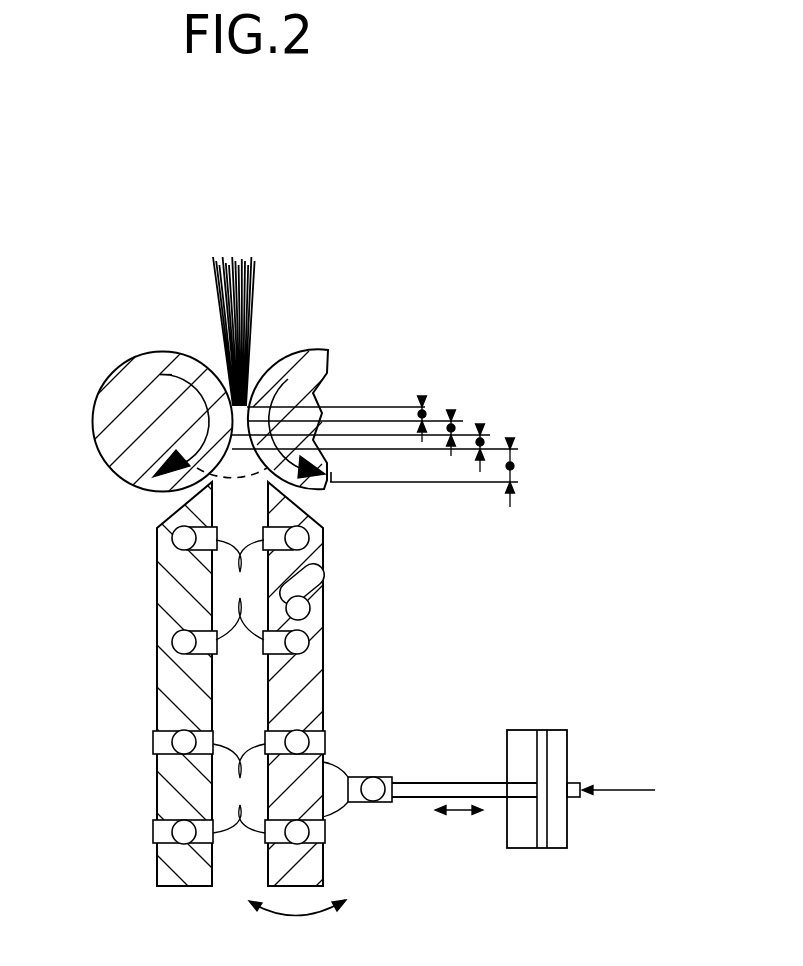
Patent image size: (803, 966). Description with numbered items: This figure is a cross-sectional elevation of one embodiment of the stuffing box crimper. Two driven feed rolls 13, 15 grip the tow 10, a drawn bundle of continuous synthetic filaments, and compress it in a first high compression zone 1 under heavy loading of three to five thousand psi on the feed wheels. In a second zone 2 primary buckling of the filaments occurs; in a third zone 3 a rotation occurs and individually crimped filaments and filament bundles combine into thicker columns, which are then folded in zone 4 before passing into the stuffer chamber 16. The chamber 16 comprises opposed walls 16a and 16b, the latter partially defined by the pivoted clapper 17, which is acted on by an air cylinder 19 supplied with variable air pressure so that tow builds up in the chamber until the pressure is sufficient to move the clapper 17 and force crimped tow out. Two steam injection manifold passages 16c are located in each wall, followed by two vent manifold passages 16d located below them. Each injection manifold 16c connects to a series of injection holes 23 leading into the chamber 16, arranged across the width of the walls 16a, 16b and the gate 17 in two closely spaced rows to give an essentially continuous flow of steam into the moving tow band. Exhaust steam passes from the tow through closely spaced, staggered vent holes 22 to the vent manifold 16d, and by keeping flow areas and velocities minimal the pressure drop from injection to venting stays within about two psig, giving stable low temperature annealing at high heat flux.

The first high compression zone 1 is at (422, 413).
The second zone 2 is at (451, 428).
The third zone 3 is at (480, 442).
The zone 4 is at (510, 466).
The tow 10 is at (235, 405).
The feed roll 13 is at (133, 353).
The feed roll 15 is at (295, 350).
The stuffer box crimper chamber 16 is at (240, 677).
The wall 16a is at (187, 575).
The wall 16b is at (318, 556).
The steam injection manifold passages 16c is at (176, 538).
The vent manifold passages 16d is at (153, 742).
The clapper 17 is at (323, 855).
The air cylinder 19 is at (553, 730).
The vent holes 22 is at (239, 788).
The injection holes 23 is at (240, 590).